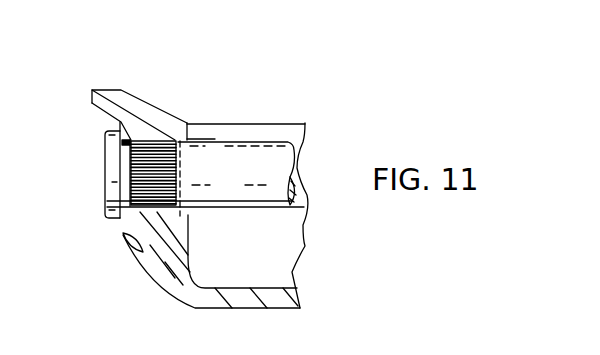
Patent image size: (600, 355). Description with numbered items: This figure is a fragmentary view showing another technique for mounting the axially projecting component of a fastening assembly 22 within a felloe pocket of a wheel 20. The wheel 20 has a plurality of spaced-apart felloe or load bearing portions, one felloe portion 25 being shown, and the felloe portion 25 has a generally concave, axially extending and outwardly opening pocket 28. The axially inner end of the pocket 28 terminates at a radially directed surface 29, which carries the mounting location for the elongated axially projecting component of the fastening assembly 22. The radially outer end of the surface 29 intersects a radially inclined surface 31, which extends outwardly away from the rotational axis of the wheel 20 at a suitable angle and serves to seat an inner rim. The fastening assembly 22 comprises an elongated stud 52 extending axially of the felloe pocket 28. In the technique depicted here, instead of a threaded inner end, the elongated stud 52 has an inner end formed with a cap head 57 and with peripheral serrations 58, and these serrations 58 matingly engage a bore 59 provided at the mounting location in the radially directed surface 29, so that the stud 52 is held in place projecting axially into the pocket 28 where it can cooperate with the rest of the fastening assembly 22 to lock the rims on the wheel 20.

The wheel 20 is at (310, 56).
The fastening assembly 22 is at (220, 220).
The felloe portion 25 is at (115, 63).
The pocket 28 is at (308, 248).
The radially directed surface 29 is at (189, 138).
The radially inclined surface 31 is at (153, 103).
The elongated stud 52 is at (287, 163).
The cap head 57 is at (105, 188).
The peripheral serrations 58 is at (140, 163).
The bore 59 is at (143, 212).